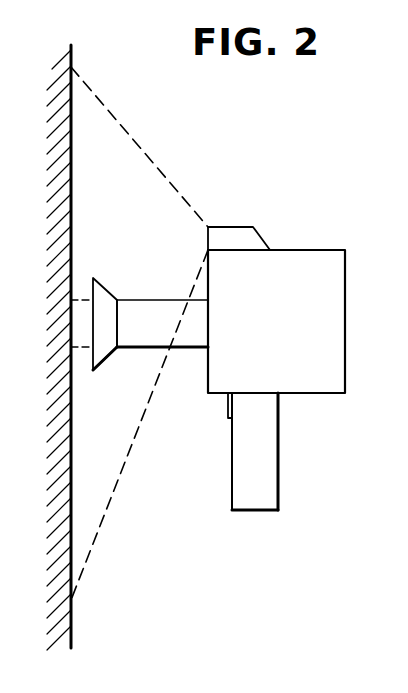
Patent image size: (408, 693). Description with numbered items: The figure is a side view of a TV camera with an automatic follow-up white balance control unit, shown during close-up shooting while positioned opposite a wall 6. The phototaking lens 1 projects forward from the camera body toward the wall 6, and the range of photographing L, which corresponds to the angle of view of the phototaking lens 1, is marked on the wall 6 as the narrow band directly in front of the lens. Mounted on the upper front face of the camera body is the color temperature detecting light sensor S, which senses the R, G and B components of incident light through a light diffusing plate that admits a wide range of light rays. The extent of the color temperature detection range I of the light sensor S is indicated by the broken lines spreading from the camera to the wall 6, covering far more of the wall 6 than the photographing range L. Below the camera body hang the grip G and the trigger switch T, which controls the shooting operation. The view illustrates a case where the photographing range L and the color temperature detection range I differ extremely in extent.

The wall 6 is at (70, 623).
The color temperature detection range I is at (177, 192).
The phototaking lens 1 is at (162, 300).
The color temperature detecting light sensor S is at (240, 226).
The range of photographing L is at (83, 295).
The trigger switch T is at (225, 403).
The grip G is at (272, 477).